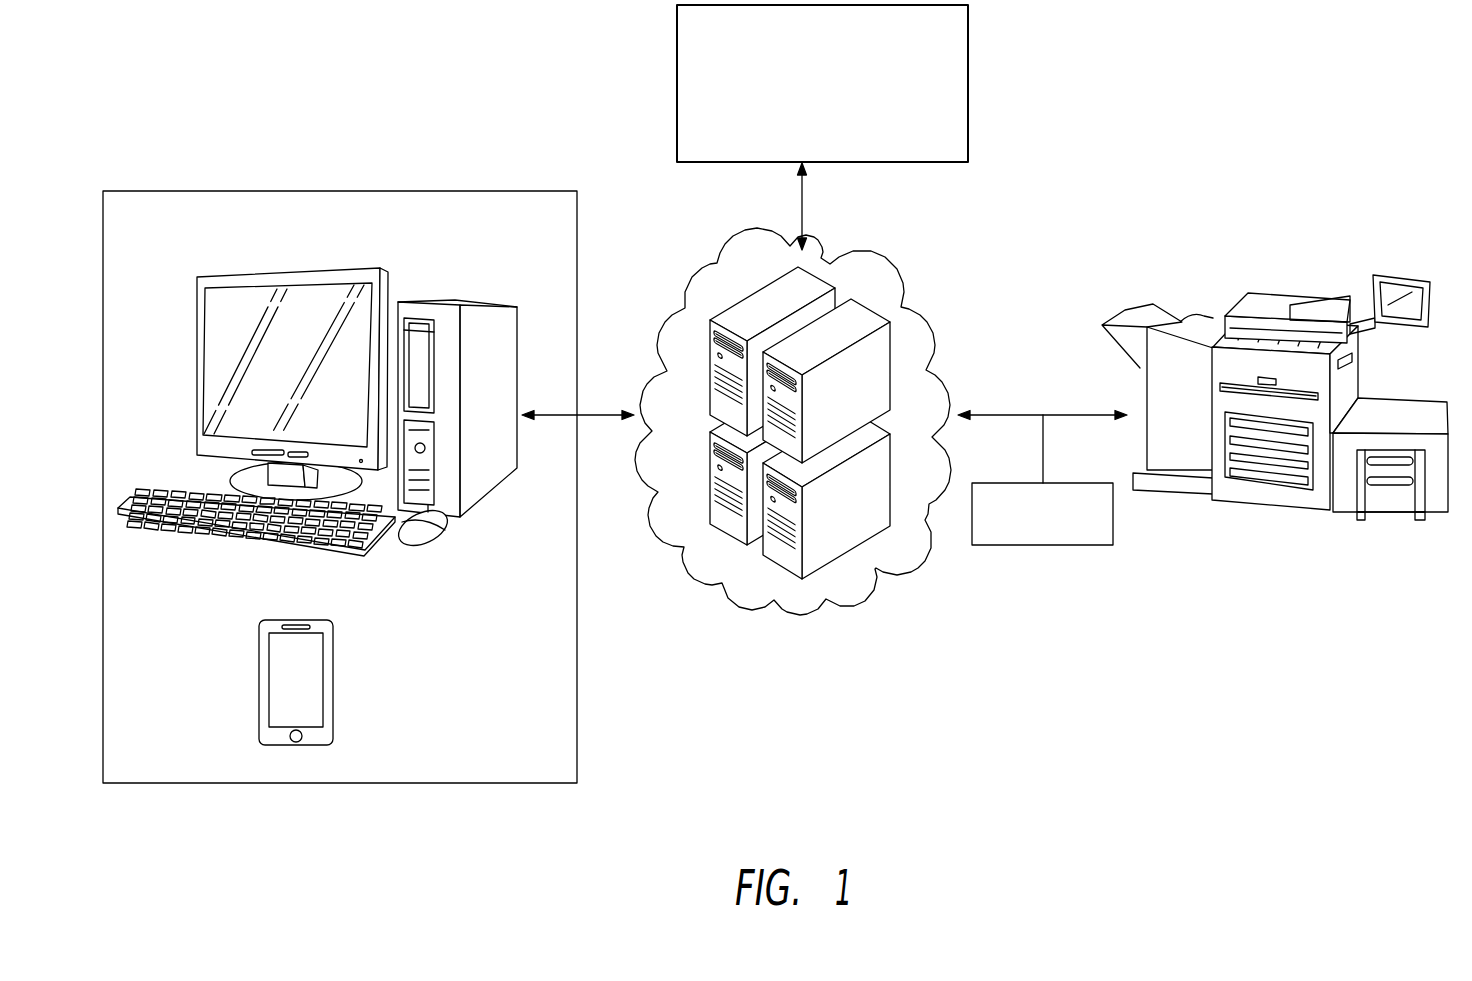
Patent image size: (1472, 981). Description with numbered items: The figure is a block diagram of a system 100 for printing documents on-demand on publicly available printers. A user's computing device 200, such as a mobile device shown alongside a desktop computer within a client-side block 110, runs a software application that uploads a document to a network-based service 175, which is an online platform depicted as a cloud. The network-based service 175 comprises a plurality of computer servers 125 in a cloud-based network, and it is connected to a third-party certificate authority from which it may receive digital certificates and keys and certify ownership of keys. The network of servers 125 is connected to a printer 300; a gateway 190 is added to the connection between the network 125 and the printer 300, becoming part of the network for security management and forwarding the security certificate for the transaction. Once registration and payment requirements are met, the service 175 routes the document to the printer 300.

The system 100 is at (1328, 214).
The client computing system 110 is at (177, 191).
The computer servers 125 is at (862, 365).
The network-based service 175 is at (903, 578).
The gateway 190 is at (1028, 483).
The computing device 200 is at (331, 608).
The printer 300 is at (1293, 512).